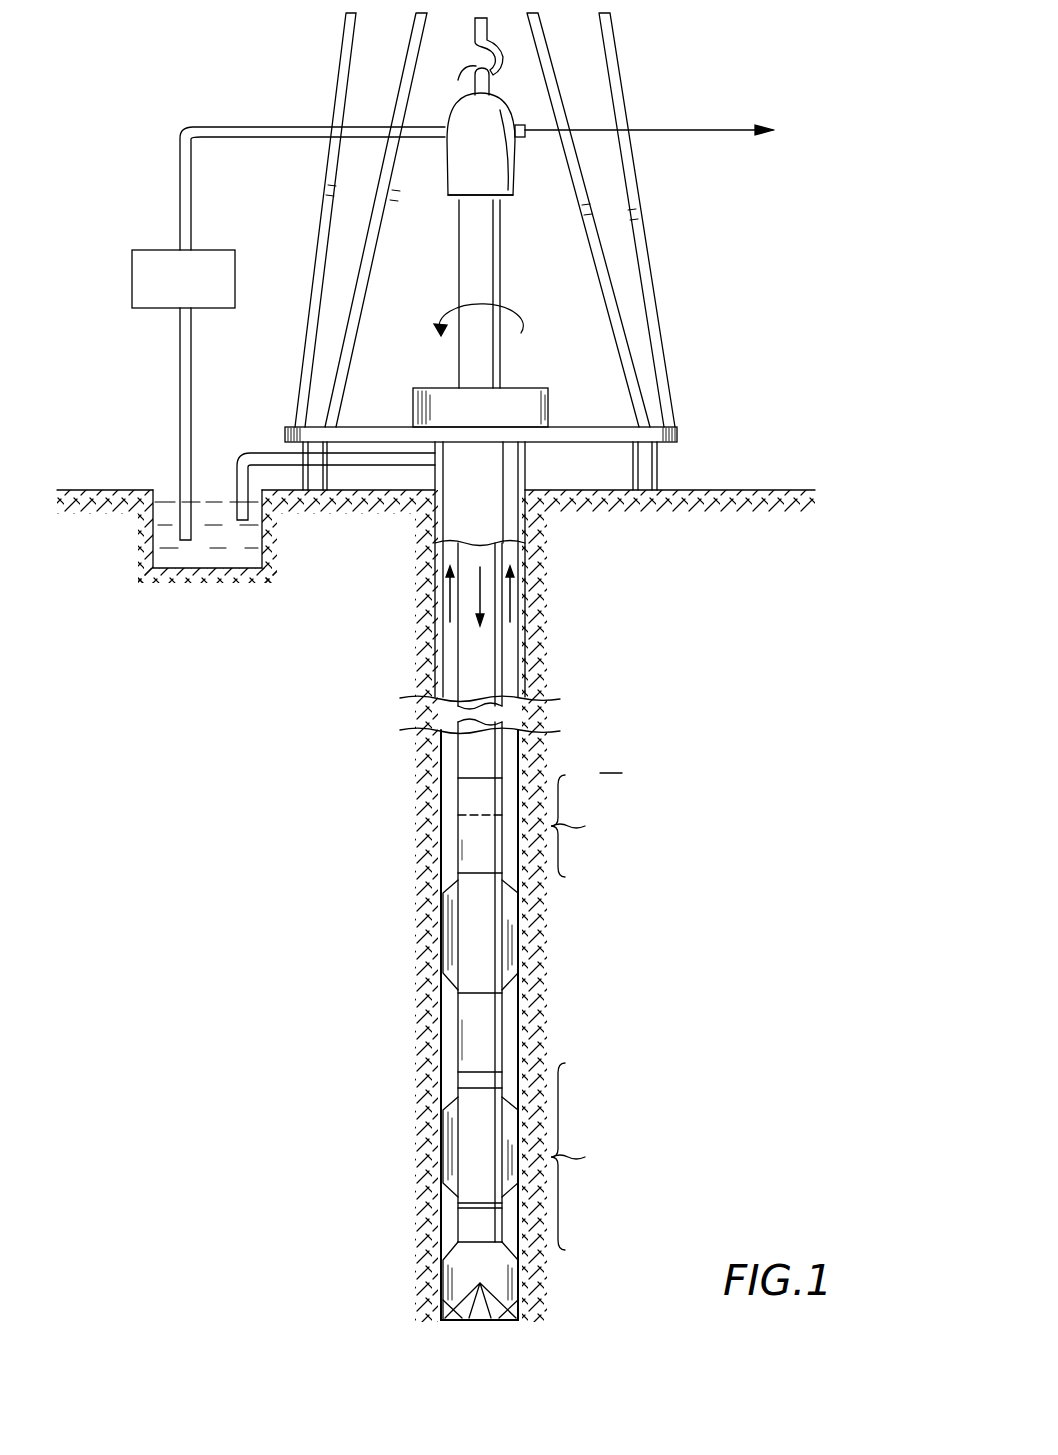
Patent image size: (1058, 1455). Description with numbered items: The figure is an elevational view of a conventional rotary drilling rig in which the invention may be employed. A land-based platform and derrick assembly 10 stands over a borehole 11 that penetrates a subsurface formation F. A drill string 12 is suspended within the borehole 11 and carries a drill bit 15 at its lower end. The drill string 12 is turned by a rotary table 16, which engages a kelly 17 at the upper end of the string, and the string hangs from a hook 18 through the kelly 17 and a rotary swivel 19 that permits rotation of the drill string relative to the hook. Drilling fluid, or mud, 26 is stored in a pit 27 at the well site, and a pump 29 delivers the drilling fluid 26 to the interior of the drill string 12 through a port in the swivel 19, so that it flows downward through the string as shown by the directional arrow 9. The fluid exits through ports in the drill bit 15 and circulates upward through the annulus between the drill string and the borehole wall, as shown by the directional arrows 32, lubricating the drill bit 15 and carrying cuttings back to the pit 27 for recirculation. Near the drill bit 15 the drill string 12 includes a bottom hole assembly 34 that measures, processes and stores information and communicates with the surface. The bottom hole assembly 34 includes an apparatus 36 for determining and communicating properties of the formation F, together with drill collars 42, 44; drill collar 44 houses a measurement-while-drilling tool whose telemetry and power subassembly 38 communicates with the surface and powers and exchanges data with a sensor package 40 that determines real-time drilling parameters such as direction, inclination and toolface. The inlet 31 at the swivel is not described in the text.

The directional arrow 9 is at (470, 597).
The platform and derrick assembly 10 is at (718, 409).
The borehole 11 is at (526, 668).
The drill string 12 is at (470, 750).
The drill bit 15 is at (462, 1283).
The rotary table 16 is at (545, 395).
The kelly 17 is at (499, 229).
The hook 18 is at (505, 70).
The rotary swivel 19 is at (463, 173).
The drilling fluid 26 is at (225, 545).
The pit 27 is at (165, 545).
The pump 29 is at (133, 308).
The fluid inlet 31 is at (520, 140).
The directional arrows 32 is at (512, 603).
The bottom hole assembly 34 is at (683, 953).
The apparatus for determining and communicating formation properties 36 is at (532, 1156).
The telemetry and power subassembly 38 is at (468, 798).
The sensor package 40 is at (468, 853).
The drill collar 42 is at (468, 1043).
The drill collar 44 is at (586, 810).